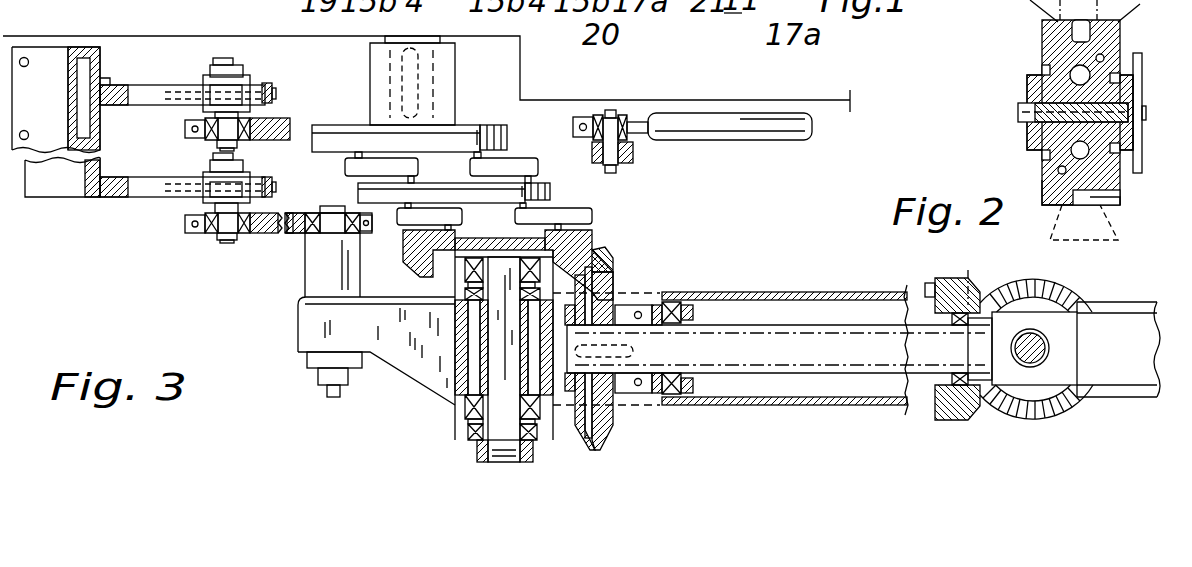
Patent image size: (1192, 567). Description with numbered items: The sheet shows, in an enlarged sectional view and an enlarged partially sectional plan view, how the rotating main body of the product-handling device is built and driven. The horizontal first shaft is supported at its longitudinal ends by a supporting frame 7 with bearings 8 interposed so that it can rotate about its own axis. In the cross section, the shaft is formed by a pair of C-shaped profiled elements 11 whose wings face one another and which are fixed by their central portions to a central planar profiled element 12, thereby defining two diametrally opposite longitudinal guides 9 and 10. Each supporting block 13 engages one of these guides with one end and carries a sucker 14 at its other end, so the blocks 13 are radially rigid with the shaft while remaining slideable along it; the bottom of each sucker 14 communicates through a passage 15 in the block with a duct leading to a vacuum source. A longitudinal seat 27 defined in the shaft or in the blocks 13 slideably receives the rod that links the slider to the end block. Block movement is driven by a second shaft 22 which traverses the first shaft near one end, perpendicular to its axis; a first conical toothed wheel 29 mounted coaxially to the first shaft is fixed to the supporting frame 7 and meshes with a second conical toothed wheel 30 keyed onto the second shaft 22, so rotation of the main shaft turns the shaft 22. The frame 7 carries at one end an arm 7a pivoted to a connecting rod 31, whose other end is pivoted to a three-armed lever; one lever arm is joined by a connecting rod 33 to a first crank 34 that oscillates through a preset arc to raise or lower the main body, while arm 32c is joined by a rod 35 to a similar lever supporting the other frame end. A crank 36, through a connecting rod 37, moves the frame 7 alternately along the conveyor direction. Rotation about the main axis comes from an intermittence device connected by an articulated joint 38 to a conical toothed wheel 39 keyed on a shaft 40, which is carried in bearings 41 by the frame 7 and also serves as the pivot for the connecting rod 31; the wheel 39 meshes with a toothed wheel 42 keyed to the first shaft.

In FIG. 3, the supporting frame 7 is at (778, 291).
In FIG. 3, the arm 7a is at (393, 345).
In FIG. 3, the bearings 8 is at (673, 293).
In FIG. 2, the longitudinal guide 9 is at (1107, 77).
In FIG. 2, the longitudinal guide 10 is at (1106, 193).
In FIG. 2, the C-shaped profiled elements 11 is at (1032, 90).
In FIG. 2, the central planar profiled element 12 is at (1058, 123).
In FIG. 2, the supporting blocks 13 is at (1043, 200).
In FIG. 2, the sucker 14 is at (1108, 248).
In FIG. 2, the passage 15 is at (1055, 31).
In FIG. 3, the second shaft 22 is at (1043, 349).
In FIG. 2, the longitudinal seat 27 is at (1070, 50).
In FIG. 3, the first conical toothed wheel 29 is at (968, 275).
In FIG. 3, the second conical toothed wheel 30 is at (1047, 278).
In FIG. 3, the connecting rod 31 is at (458, 432).
In FIG. 3, the arm of lever 32c is at (635, 158).
In FIG. 3, the connecting rod 33 is at (288, 115).
In FIG. 3, the first crank 34 is at (143, 93).
In FIG. 3, the rod 35 is at (773, 127).
In FIG. 3, the crank 36 is at (140, 197).
In FIG. 3, the connecting rod 37 is at (265, 233).
In FIG. 3, the articulated joint 38 is at (565, 188).
In FIG. 3, the conical toothed wheel 39 is at (594, 246).
In FIG. 3, the shaft 40 is at (585, 447).
In FIG. 3, the bearings 41 is at (452, 285).
In FIG. 3, the toothed wheel 42 is at (607, 267).